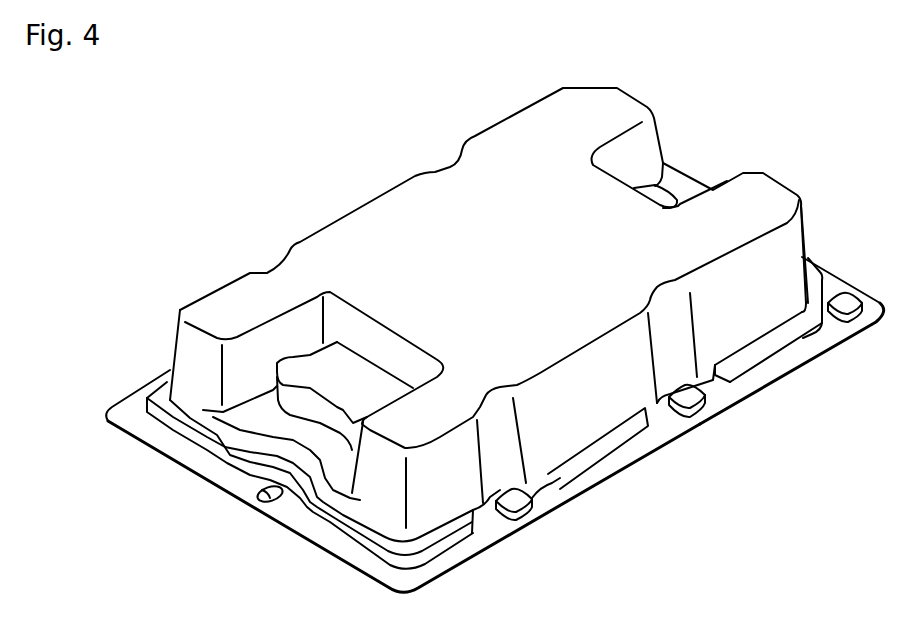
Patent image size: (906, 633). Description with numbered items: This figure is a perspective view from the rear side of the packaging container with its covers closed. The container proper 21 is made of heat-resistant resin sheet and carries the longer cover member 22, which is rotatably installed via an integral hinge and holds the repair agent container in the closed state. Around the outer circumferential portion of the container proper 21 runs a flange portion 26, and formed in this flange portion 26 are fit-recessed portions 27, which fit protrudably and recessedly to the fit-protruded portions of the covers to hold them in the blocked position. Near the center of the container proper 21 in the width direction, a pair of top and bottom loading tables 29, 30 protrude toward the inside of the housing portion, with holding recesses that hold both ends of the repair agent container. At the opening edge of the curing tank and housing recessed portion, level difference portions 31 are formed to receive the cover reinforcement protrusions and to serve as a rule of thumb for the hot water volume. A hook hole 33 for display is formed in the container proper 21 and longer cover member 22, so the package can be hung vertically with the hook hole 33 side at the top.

The container proper 21 is at (489, 129).
The longer cover member 22 is at (478, 560).
The flange portion 26 is at (590, 478).
The fit-recessed portions 27 is at (525, 510).
The loading table 29 is at (267, 340).
The loading table 30 is at (638, 151).
The level difference portions 31 is at (343, 528).
The hook hole 33 is at (248, 493).